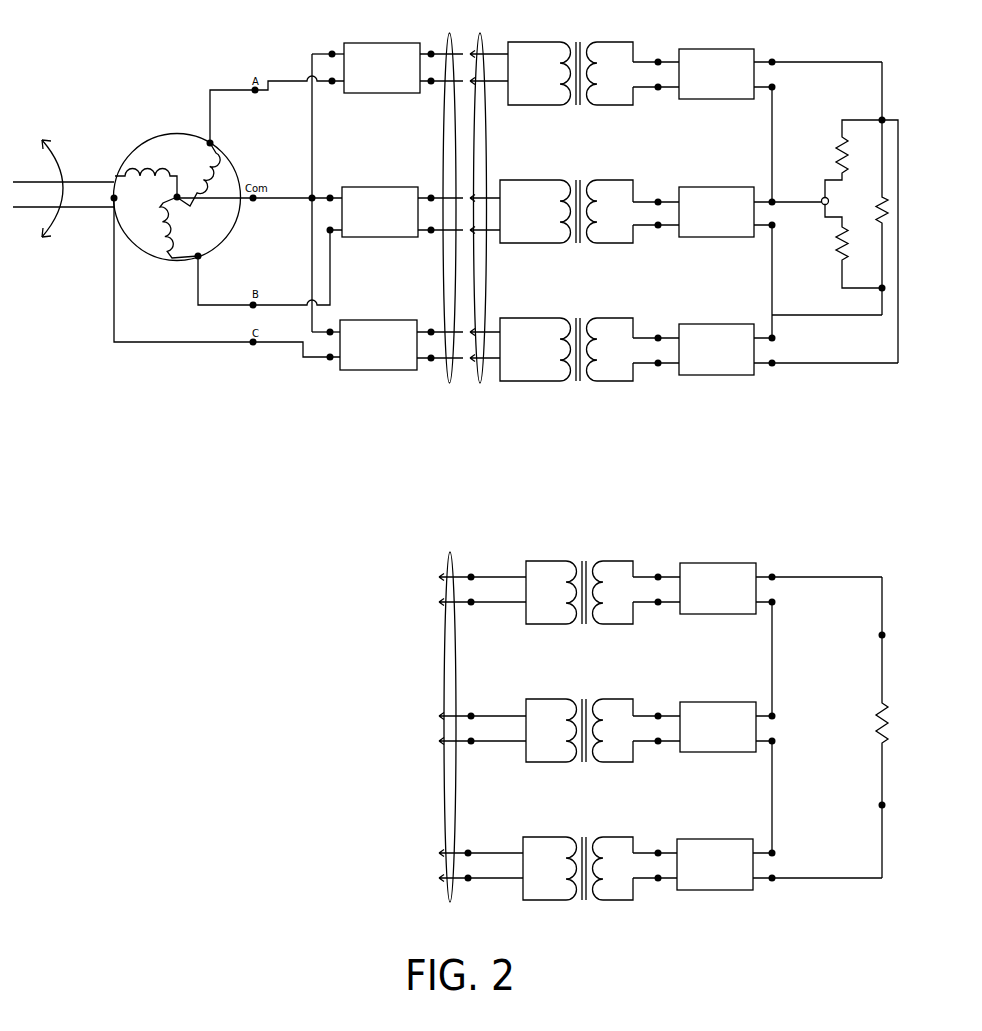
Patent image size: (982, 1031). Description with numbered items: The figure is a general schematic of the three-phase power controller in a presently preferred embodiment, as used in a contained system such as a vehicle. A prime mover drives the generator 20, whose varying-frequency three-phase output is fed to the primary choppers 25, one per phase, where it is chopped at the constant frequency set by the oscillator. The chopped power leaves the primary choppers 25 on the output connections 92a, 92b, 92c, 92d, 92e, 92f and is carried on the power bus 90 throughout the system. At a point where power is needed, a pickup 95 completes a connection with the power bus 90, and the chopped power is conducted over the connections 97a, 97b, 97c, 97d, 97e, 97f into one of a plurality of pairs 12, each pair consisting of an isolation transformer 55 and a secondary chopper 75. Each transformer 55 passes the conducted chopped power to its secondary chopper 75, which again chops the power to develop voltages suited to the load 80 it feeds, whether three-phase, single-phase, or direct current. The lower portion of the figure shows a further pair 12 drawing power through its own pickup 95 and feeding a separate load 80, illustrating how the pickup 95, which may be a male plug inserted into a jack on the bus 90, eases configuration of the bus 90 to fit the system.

The pair of transformer and secondary chopper 12 is at (628, 9).
The generator 20 is at (184, 166).
The primary chopper 25 is at (416, 334).
The isolation transformer 55 is at (557, 856).
The secondary chopper 75 is at (747, 860).
The load 80 is at (872, 725).
The power bus 90 is at (450, 39).
The converter output line 92a is at (447, 53).
The converter output line 92b is at (447, 80).
The converter output line 92c is at (445, 196).
The converter output line 92d is at (445, 226).
The converter output line 92e is at (445, 331).
The converter output line 92f is at (445, 357).
The pickup 95 is at (481, 39).
The transformer input line 97a is at (475, 55).
The transformer input line 97b is at (475, 82).
The transformer input line 97c is at (476, 198).
The transformer input line 97d is at (476, 229).
The transformer input line 97e is at (476, 333).
The transformer input line 97f is at (476, 359).